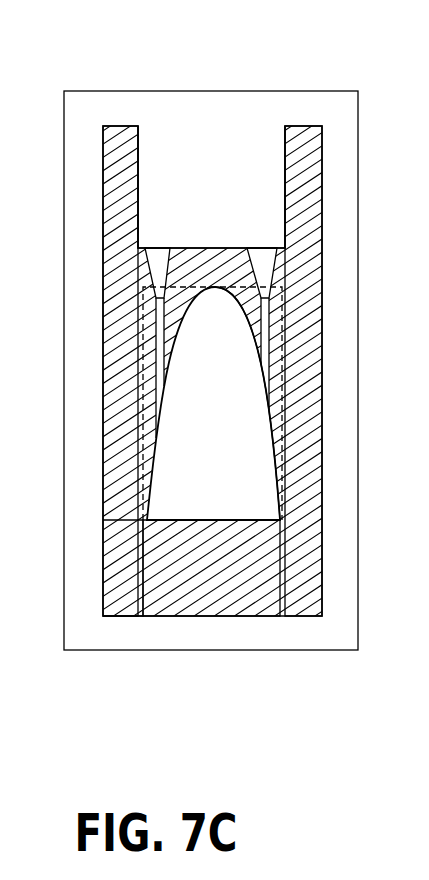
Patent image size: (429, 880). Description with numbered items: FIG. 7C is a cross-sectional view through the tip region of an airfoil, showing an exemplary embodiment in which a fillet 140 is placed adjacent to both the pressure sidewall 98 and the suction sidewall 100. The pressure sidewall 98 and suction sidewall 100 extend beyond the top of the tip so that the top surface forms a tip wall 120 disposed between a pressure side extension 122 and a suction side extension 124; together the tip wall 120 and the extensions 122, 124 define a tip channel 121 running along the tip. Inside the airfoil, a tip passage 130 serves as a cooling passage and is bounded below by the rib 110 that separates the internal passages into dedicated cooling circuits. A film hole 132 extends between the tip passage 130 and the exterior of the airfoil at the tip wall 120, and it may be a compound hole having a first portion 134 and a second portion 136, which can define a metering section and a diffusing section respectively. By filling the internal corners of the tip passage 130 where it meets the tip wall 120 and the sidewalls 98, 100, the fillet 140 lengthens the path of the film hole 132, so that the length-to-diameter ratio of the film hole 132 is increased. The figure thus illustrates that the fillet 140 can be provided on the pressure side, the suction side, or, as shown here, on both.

The pressure sidewall 98 is at (323, 365).
The suction sidewall 100 is at (103, 437).
The rib 110 is at (227, 581).
The tip wall 120 is at (186, 248).
The tip channel 121 is at (238, 142).
The pressure side extension 122 is at (304, 126).
The suction side extension 124 is at (103, 188).
The tip passage 130 is at (188, 470).
The film hole 132 is at (250, 327).
The first portion 134 is at (268, 349).
The second portion 136 is at (278, 273).
The fillet 140 is at (185, 328).